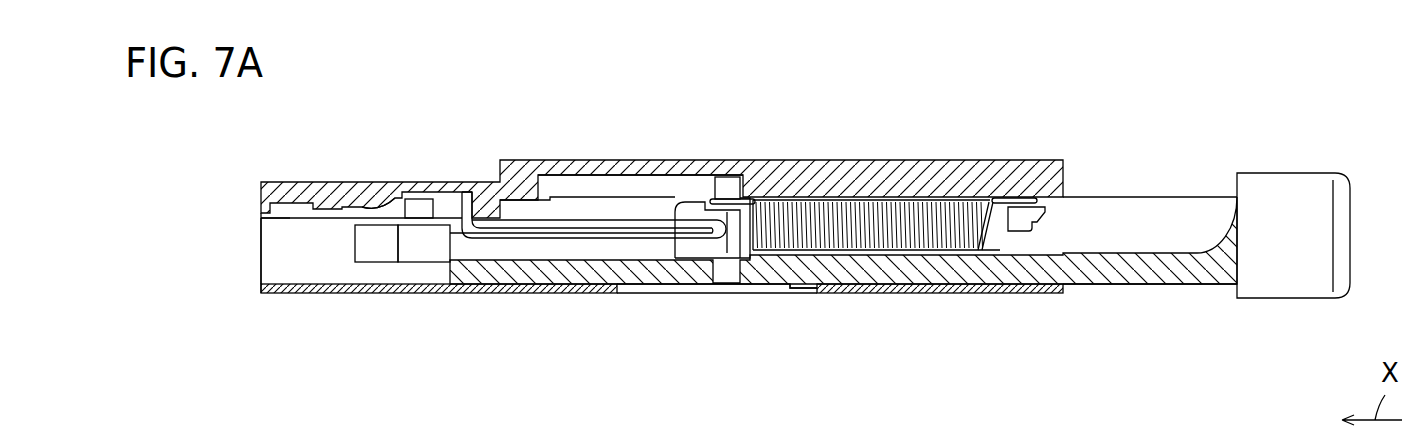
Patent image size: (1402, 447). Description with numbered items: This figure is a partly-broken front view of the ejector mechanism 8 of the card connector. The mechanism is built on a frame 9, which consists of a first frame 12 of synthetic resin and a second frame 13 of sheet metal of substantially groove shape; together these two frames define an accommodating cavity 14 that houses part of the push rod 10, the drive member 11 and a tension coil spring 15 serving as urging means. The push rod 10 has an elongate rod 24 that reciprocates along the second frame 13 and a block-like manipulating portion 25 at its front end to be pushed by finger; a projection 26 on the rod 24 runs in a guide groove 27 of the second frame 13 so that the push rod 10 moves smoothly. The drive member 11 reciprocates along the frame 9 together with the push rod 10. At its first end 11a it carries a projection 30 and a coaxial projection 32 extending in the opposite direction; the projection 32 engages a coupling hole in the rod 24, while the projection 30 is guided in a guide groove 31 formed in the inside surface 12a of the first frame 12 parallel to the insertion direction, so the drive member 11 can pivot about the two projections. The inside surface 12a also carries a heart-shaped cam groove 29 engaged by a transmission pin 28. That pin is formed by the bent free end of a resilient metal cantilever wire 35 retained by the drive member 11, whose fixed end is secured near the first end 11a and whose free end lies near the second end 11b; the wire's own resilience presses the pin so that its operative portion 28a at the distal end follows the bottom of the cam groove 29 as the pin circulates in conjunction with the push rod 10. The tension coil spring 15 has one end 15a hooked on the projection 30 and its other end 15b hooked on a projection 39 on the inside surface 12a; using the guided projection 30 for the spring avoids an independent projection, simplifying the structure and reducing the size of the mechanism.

The ejector mechanism 8 is at (1086, 128).
The frame 9 is at (877, 133).
The push rod 10 is at (1278, 163).
The drive member 11 is at (430, 274).
The first end of the drive member 11a is at (660, 252).
The second end of the drive member 11b is at (373, 252).
The first frame 12 is at (820, 148).
The inside surface of the first frame 12a is at (280, 228).
The second frame 13 is at (503, 295).
The accommodating cavity 14 is at (280, 268).
The tension coil spring 15 is at (903, 213).
The one end of the tension coil spring 15a is at (714, 200).
The other end of the tension coil spring 15b is at (1018, 200).
The rod 24 is at (1126, 268).
The manipulating portion 25 is at (1310, 192).
The projection 26 is at (803, 288).
The guide groove 27 is at (625, 286).
The transmission pin 28 is at (437, 199).
The operative portion 28a is at (467, 190).
The cam groove 29 is at (388, 200).
The projection 30 is at (731, 180).
The guide groove 31 is at (607, 182).
The projection 32 is at (728, 276).
The cantilever wire 35 is at (578, 211).
The projection 39 is at (1023, 222).